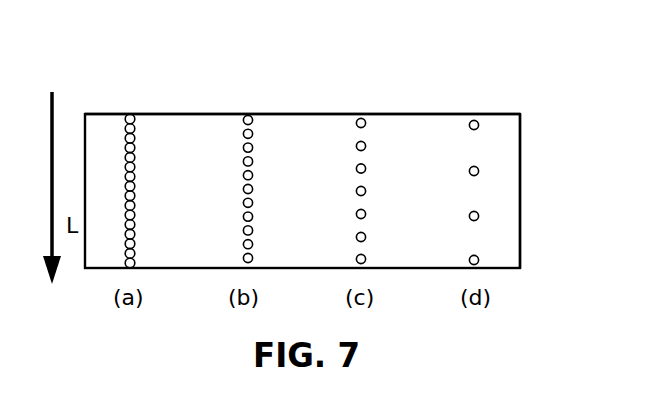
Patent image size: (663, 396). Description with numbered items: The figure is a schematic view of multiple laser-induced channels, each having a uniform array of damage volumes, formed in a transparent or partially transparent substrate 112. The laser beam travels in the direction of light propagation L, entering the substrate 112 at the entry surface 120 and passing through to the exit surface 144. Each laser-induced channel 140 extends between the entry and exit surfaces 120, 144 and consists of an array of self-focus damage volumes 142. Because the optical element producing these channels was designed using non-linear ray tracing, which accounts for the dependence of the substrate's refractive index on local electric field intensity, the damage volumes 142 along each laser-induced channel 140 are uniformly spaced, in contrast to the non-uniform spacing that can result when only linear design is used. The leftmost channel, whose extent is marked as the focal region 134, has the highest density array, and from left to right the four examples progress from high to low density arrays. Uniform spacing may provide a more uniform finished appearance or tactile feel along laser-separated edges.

The substrate 112 is at (187, 126).
The entry surface 120 is at (442, 114).
The focal region 134 is at (156, 116).
The laser-induced channel 140 is at (347, 157).
The damage volumes 142 is at (469, 176).
The exit surface 144 is at (518, 269).